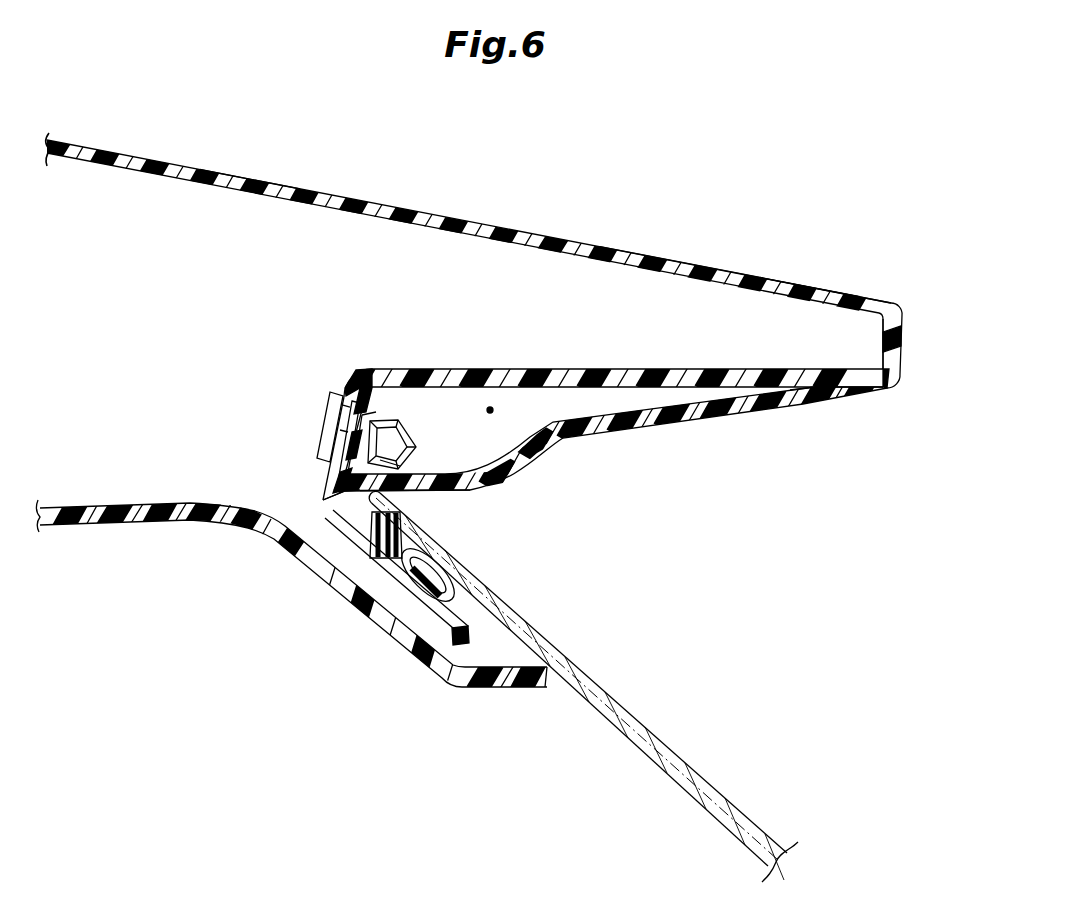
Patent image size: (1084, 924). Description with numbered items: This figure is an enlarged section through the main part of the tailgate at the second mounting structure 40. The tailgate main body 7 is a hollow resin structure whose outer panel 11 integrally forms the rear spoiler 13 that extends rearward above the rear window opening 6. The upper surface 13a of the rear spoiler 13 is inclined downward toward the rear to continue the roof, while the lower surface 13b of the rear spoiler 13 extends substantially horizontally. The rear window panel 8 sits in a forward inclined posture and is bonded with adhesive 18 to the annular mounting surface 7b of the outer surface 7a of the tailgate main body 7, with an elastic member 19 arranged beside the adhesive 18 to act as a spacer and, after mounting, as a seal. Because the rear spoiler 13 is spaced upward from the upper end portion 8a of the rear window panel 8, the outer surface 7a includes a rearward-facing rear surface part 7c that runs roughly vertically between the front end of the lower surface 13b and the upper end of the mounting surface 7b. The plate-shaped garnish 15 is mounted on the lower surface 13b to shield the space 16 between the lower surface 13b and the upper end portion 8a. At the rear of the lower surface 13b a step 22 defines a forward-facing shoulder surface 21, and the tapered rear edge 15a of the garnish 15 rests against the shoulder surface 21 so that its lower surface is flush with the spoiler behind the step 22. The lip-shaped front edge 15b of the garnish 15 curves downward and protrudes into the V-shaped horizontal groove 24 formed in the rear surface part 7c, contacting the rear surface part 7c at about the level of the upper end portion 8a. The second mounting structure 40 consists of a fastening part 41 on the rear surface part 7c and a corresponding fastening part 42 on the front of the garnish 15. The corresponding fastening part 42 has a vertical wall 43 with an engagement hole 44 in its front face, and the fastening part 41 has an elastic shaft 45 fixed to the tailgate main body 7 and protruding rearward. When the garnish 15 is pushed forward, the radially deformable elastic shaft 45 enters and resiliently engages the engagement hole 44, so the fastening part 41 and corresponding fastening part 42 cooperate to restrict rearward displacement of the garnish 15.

The rear window opening 6 is at (545, 691).
The tailgate main body 7 is at (350, 191).
The outer surface 7a is at (904, 350).
The mounting surface 7b is at (462, 628).
The rear surface part 7c is at (428, 490).
The rear window panel 8 is at (712, 778).
The upper end portion 8a is at (389, 500).
The outer panel 11 is at (242, 179).
The rear spoiler 13 is at (831, 292).
The upper surface 13a is at (620, 247).
The lower surface 13b is at (570, 352).
The garnish 15 is at (655, 434).
The rear edge 15a is at (838, 398).
The front edge 15b is at (340, 495).
The space 16 is at (490, 407).
The adhesive 18 is at (413, 591).
The elastic member 19 is at (343, 576).
The forward-facing shoulder surface 21 is at (805, 402).
The step 22 is at (858, 409).
The horizontal groove 24 is at (333, 546).
The second mounting structure 40 is at (345, 354).
The fastening part 41 is at (323, 393).
The corresponding fastening part 42 is at (396, 411).
The vertical wall 43 is at (385, 409).
The engagement hole 44 is at (338, 433).
The elastic shaft 45 is at (407, 437).